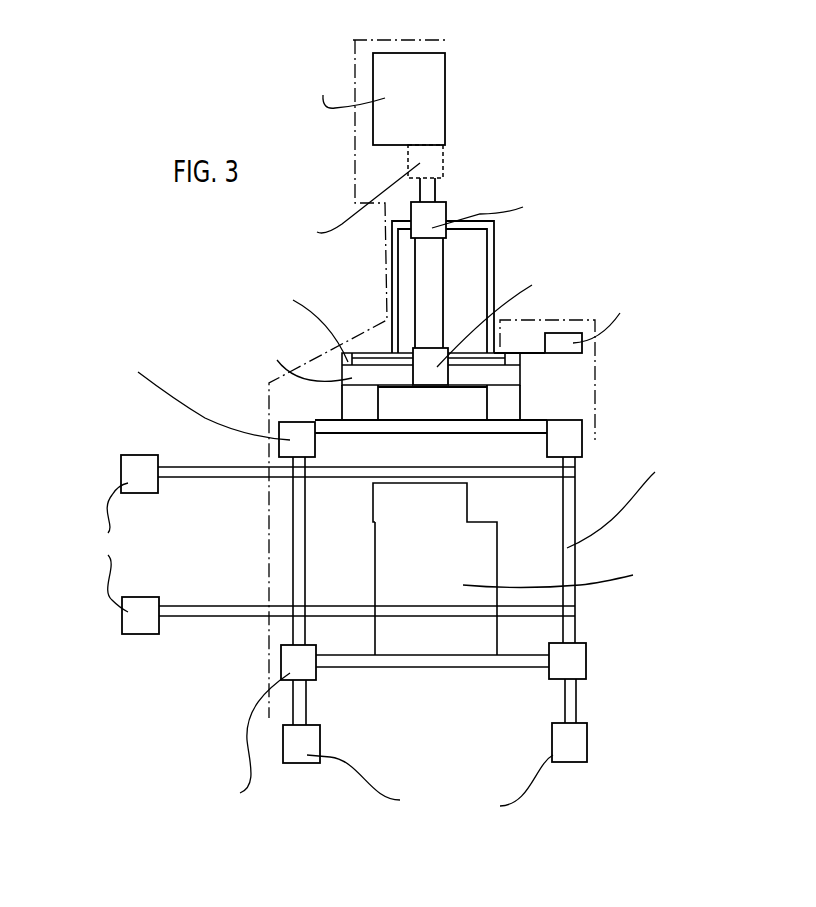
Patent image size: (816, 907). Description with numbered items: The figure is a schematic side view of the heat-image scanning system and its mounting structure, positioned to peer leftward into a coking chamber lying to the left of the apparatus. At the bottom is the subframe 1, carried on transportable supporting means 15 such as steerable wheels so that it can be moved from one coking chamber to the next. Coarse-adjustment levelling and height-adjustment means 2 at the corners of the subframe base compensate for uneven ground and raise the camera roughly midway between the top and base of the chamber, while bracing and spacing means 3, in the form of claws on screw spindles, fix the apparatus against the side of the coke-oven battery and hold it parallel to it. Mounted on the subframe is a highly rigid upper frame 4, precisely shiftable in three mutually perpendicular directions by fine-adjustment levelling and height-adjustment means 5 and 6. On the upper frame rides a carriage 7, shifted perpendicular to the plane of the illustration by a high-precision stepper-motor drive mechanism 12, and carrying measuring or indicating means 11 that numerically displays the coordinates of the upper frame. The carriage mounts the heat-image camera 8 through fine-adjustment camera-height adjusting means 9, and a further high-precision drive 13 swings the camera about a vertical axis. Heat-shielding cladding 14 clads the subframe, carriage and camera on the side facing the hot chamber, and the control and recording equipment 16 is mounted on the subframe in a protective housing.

The subframe 1 is at (567, 560).
The coarse-adjustment levelling and height-adjustment means 2 is at (586, 668).
The bracing and spacing means 3 is at (140, 462).
The upper frame 4 is at (505, 380).
The fine-adjustment levelling and height-adjustment means 5 is at (582, 440).
The fine-adjustment levelling and height-adjustment means 6 is at (510, 407).
The carriage 7 is at (395, 268).
The heat-image camera 8 is at (435, 108).
The fine-adjustment camera-height adjusting means 9 is at (433, 212).
The measuring or indicating means 11 is at (552, 338).
The drive mechanism 12 is at (435, 355).
The drive 13 is at (447, 162).
The heat-shielding cladding 14 is at (447, 40).
The supporting means 15 is at (577, 740).
The control and recording equipment 16 is at (487, 558).